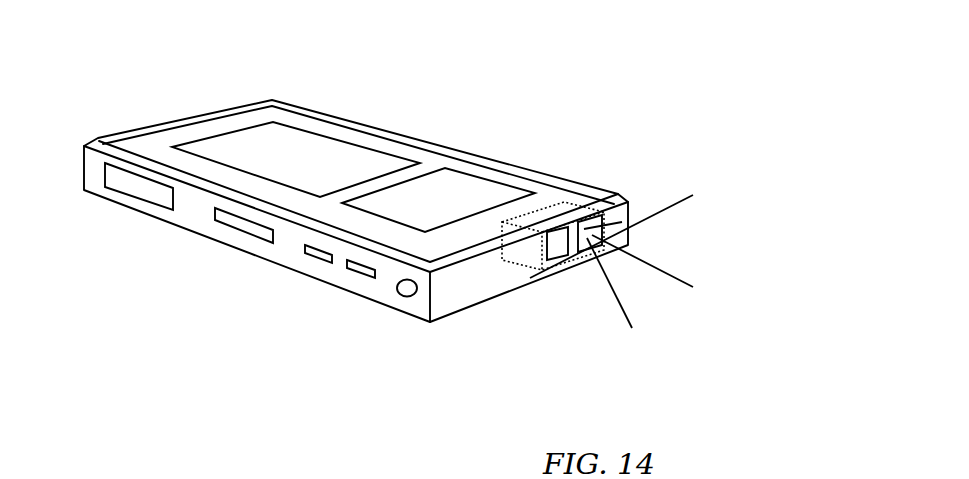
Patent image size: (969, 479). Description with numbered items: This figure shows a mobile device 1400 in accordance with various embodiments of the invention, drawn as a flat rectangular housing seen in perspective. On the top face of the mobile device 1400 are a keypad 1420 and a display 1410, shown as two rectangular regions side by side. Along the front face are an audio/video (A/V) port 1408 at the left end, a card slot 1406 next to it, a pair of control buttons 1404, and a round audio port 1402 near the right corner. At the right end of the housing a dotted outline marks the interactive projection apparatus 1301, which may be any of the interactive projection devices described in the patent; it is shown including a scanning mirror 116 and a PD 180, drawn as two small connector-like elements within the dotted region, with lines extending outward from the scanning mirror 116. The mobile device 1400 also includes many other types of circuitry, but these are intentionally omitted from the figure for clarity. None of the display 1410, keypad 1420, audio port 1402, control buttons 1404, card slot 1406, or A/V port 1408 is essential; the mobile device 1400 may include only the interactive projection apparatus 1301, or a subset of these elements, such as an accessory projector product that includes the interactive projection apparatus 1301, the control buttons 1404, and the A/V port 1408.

The mobile device 1400 is at (652, 56).
The keypad 1420 is at (308, 143).
The display 1410 is at (448, 182).
The interactive projection apparatus 1301 is at (569, 202).
The audio/video (A/V) port 1408 is at (124, 183).
The card slot 1406 is at (238, 226).
The control buttons 1404 is at (351, 272).
The audio port 1402 is at (405, 298).
The PD 180 is at (556, 260).
The scanning mirror 116 is at (583, 247).